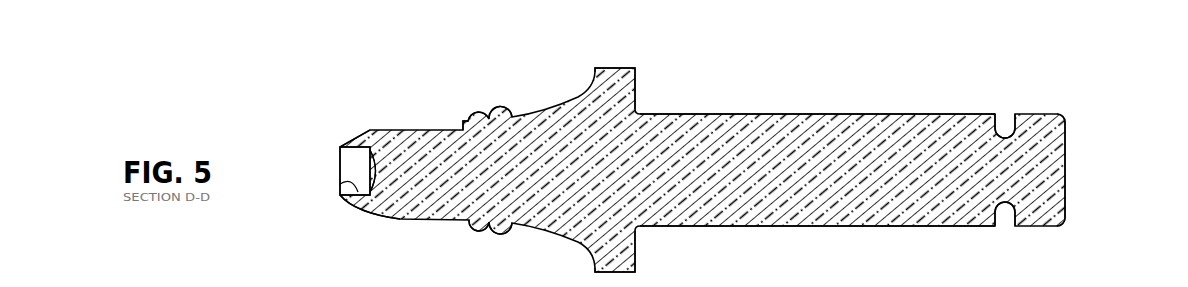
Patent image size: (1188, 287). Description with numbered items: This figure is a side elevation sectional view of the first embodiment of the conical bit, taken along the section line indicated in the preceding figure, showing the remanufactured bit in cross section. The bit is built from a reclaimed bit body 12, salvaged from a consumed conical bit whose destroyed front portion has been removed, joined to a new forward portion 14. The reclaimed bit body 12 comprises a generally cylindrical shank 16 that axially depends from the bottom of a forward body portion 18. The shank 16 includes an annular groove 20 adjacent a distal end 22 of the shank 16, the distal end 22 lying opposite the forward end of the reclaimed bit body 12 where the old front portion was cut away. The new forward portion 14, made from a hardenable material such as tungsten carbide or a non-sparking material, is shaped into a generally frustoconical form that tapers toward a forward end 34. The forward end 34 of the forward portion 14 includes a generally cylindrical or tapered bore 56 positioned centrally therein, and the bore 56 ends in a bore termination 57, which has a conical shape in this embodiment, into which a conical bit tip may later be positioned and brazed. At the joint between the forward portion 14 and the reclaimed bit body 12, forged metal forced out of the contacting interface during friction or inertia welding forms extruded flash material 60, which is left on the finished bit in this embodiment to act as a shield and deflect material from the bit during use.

The reclaimed bit body 12 is at (835, 70).
The new forward portion 14 is at (402, 103).
The shank 16 is at (733, 113).
The forward body portion 18 is at (590, 78).
The annular groove 20 is at (1006, 137).
The distal end 22 is at (1066, 143).
The forward end 34 is at (340, 146).
The bore 56 is at (340, 184).
The bore termination 57 is at (372, 166).
The extruded flash material 60 is at (493, 112).